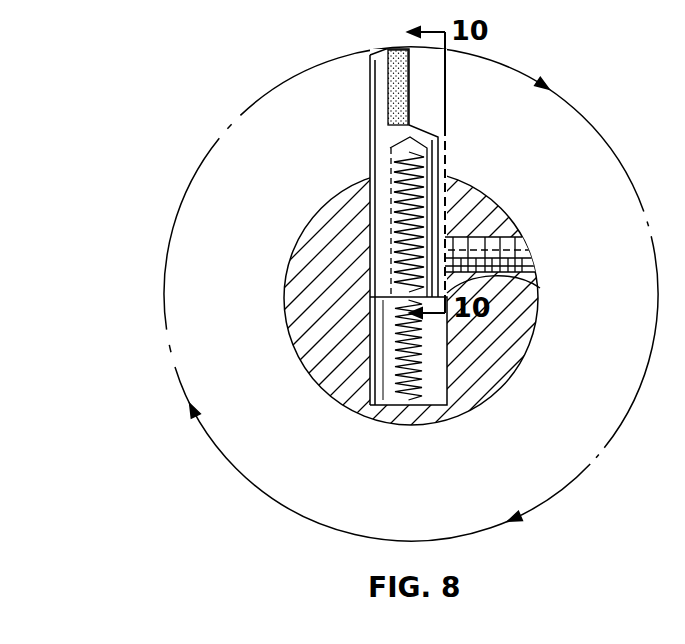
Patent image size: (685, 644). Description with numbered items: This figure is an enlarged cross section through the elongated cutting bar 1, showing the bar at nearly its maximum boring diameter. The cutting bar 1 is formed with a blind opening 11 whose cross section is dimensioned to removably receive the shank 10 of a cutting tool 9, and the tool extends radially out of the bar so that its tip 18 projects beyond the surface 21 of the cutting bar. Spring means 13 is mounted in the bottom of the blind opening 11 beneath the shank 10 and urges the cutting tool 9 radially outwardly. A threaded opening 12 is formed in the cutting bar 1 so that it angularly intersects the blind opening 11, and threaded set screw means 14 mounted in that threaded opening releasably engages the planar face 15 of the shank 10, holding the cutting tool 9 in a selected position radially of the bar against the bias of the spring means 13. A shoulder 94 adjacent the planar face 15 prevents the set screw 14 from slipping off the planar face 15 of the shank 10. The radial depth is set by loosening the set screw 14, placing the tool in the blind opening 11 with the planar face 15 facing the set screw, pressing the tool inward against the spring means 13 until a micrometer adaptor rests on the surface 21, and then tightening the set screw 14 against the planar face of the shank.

The cutting bar 1 is at (519, 212).
The cutting tool 9 is at (370, 222).
The shank 10 is at (383, 250).
The blind opening 11 is at (437, 192).
The threaded opening 12 is at (530, 254).
The spring means 13 is at (418, 385).
The set screw means 14 is at (511, 232).
The planar face 15 is at (499, 240).
The tip 18 is at (405, 48).
The surface 21 is at (327, 194).
The shoulder 94 is at (538, 289).